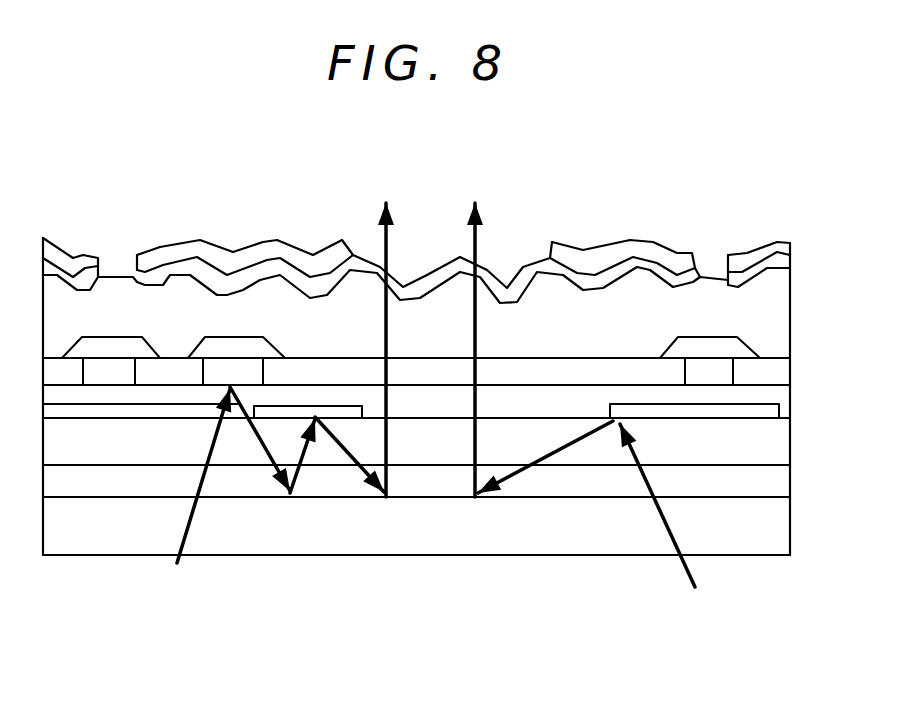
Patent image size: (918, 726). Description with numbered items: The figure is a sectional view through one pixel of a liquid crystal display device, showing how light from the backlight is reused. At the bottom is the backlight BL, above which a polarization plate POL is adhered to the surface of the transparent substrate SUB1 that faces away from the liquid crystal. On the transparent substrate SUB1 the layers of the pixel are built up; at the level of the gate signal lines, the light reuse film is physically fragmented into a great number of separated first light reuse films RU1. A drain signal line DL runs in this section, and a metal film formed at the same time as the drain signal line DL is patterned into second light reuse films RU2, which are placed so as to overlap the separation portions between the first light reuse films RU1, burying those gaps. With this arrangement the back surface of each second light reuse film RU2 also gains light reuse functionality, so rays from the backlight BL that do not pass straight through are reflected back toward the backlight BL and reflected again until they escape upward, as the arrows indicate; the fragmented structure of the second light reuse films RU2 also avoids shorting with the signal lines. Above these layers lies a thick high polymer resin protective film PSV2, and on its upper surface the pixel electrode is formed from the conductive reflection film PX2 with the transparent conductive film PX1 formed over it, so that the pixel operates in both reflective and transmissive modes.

The transparent conductive film PX1 is at (398, 277).
The conductive reflection film PX2 is at (52, 248).
The protective film PSV2 is at (188, 307).
The second light reuse film RU2 is at (108, 367).
The light reuse film RU1 is at (127, 410).
The drain signal line DL is at (723, 372).
The polarization plate POL is at (330, 485).
The backlight BL is at (425, 540).
The transparent substrate SUB1 is at (563, 403).